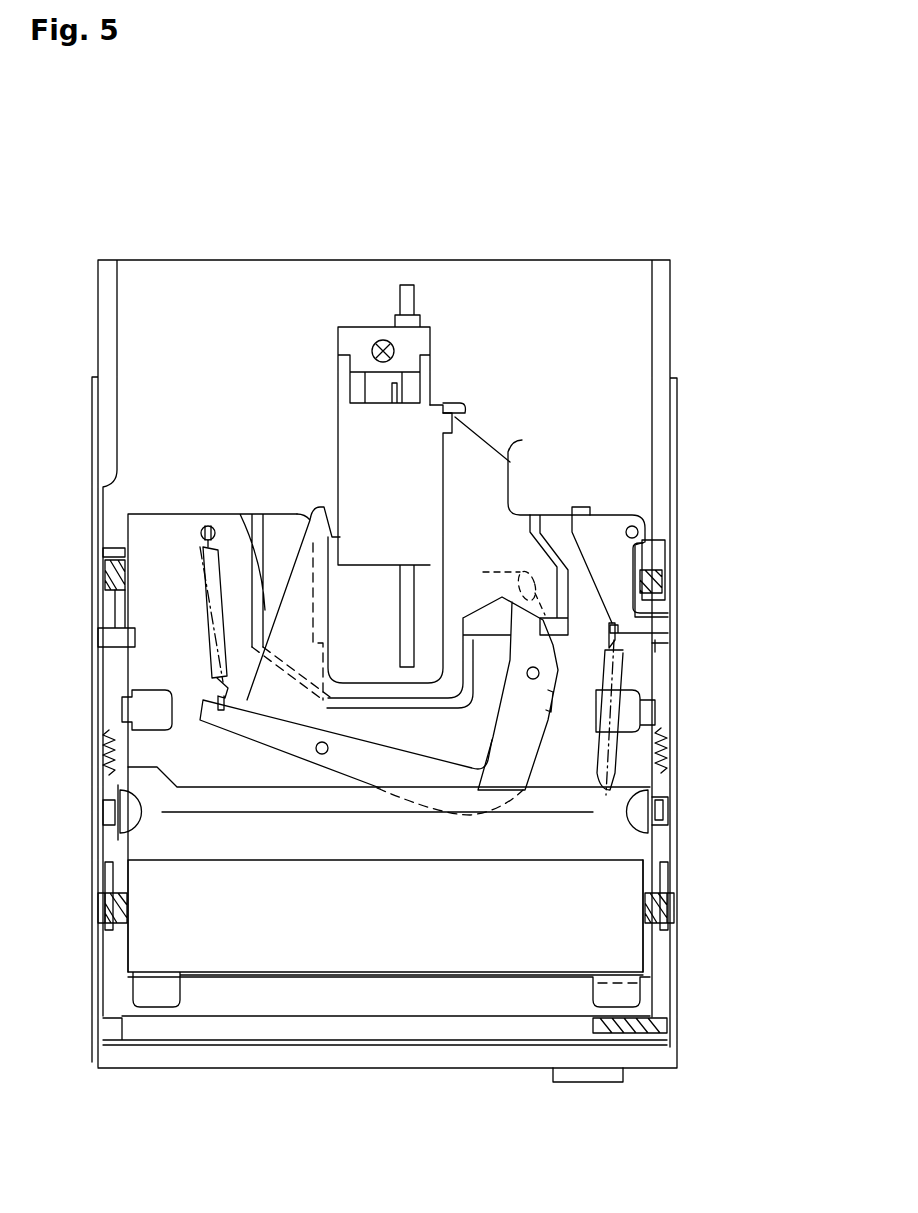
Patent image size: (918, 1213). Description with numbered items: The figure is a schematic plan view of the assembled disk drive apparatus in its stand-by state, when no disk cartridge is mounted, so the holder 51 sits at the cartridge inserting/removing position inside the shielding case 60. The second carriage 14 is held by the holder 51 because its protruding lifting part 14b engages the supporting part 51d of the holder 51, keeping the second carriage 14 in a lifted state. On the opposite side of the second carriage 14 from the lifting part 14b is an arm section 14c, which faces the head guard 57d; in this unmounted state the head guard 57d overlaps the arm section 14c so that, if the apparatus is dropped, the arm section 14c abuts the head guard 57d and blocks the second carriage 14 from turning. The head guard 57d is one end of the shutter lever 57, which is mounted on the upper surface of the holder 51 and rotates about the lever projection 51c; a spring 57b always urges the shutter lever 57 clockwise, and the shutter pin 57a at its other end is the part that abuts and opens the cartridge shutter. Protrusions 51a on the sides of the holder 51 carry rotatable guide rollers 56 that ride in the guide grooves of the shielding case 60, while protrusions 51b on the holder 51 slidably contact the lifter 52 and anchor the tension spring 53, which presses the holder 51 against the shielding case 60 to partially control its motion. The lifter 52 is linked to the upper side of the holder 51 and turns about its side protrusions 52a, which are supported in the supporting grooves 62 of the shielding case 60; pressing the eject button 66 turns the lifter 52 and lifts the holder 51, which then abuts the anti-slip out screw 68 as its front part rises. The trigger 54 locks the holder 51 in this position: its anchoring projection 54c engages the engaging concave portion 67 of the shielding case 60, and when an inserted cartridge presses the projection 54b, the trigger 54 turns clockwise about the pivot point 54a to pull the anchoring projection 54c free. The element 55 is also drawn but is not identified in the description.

The second carriage 14 is at (338, 422).
The lifting part 14b is at (453, 417).
The arm section 14c is at (313, 527).
The holder 51 is at (167, 520).
The protrusions 51a is at (105, 575).
The protrusions 51b is at (665, 718).
The lever projection 51c is at (322, 755).
The supporting part 51d is at (508, 460).
The lifter 52 is at (228, 850).
The protrusions 52a is at (108, 805).
The tension spring 53 is at (672, 748).
The trigger 54 is at (610, 517).
The pivot point 54a is at (640, 530).
The projection 54b is at (580, 507).
The anchoring projection 54c is at (668, 632).
The plunger 55 is at (597, 755).
The guide rollers 56 is at (108, 562).
The shutter lever 57 is at (493, 742).
The shutter pin 57a is at (483, 572).
The spring 57b is at (203, 600).
The head guard 57d is at (257, 548).
The shielding case 60 is at (668, 305).
The supporting grooves 62 is at (103, 825).
The eject button 66 is at (583, 1075).
The engaging concave portion 67 is at (668, 645).
The anti-slip out screw 68 is at (668, 810).